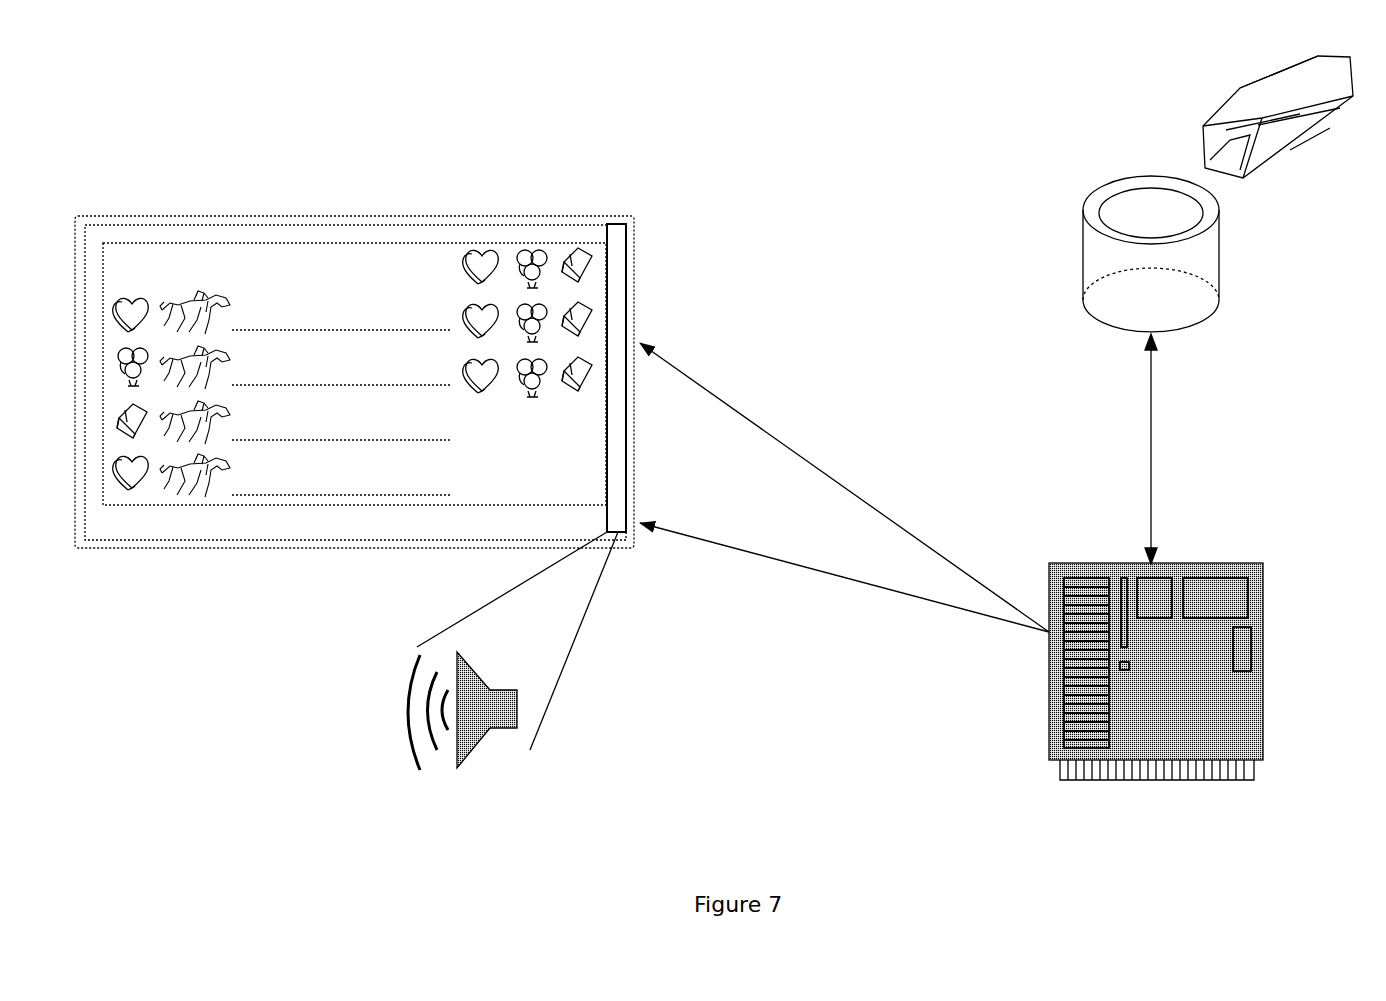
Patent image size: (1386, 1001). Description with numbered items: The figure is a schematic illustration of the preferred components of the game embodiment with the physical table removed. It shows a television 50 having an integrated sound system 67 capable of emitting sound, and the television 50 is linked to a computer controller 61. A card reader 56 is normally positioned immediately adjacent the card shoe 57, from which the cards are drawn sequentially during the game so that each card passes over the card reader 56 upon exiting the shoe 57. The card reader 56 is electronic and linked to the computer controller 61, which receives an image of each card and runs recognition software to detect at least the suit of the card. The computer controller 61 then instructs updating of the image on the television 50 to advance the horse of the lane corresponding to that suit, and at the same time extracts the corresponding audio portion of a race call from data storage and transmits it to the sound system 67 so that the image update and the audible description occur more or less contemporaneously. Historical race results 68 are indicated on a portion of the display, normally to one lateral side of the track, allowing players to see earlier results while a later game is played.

The television 50 is at (417, 384).
The sound system 67 is at (625, 518).
The historical race results 68 is at (553, 250).
The card reader 56 is at (1092, 180).
The card shoe 57 is at (1240, 92).
The computer controller 61 is at (1277, 710).